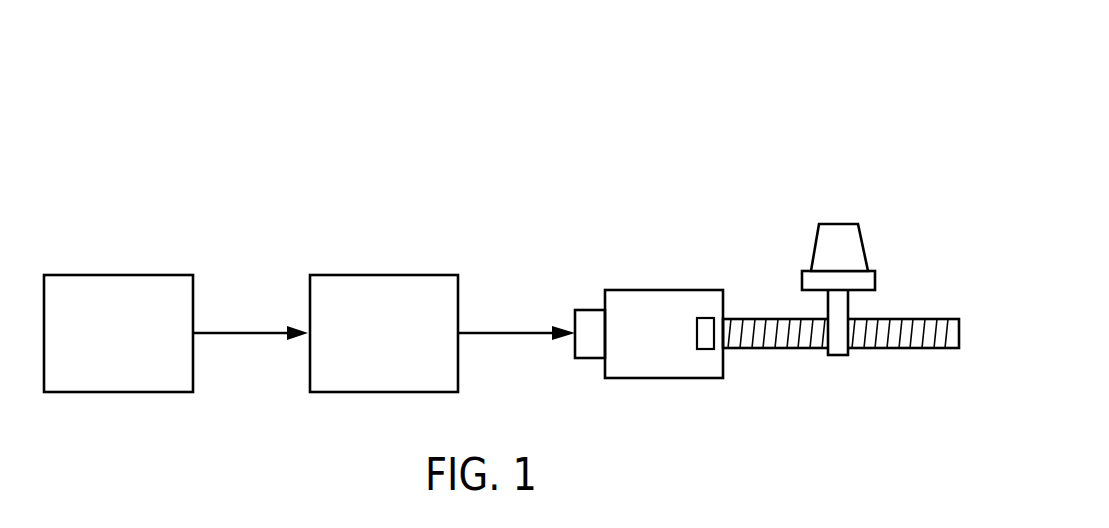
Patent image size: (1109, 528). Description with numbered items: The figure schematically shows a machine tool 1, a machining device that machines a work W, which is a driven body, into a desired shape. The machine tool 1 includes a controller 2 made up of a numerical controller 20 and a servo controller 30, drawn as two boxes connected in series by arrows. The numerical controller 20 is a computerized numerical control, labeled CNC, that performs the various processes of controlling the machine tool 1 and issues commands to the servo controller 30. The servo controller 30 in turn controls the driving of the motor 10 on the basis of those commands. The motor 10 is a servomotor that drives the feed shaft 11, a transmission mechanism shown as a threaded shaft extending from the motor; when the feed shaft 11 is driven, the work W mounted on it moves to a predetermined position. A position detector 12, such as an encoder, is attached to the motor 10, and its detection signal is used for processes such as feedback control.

The machine tool 1 is at (890, 102).
The controller 2 is at (378, 160).
The motor 10 is at (630, 290).
The feed shaft 11 is at (915, 345).
The position detector 12 is at (705, 318).
The numerical controller 20 is at (147, 275).
The servo controller 30 is at (425, 275).
The work W is at (847, 223).